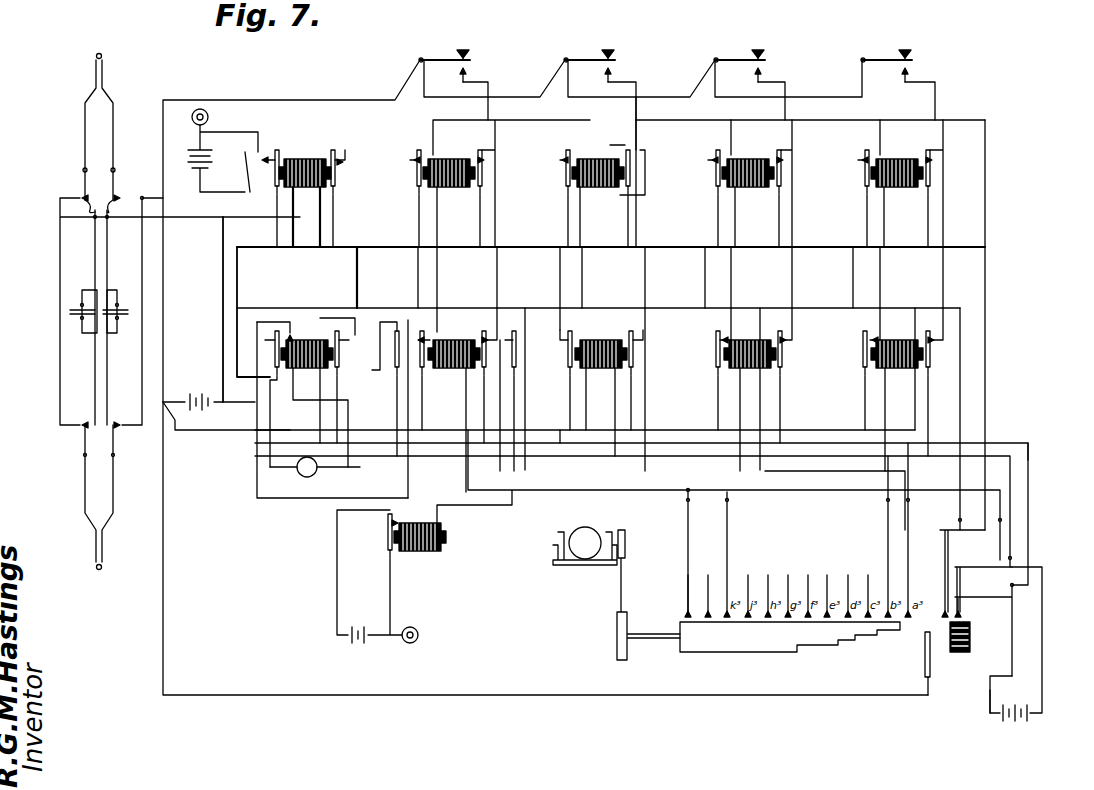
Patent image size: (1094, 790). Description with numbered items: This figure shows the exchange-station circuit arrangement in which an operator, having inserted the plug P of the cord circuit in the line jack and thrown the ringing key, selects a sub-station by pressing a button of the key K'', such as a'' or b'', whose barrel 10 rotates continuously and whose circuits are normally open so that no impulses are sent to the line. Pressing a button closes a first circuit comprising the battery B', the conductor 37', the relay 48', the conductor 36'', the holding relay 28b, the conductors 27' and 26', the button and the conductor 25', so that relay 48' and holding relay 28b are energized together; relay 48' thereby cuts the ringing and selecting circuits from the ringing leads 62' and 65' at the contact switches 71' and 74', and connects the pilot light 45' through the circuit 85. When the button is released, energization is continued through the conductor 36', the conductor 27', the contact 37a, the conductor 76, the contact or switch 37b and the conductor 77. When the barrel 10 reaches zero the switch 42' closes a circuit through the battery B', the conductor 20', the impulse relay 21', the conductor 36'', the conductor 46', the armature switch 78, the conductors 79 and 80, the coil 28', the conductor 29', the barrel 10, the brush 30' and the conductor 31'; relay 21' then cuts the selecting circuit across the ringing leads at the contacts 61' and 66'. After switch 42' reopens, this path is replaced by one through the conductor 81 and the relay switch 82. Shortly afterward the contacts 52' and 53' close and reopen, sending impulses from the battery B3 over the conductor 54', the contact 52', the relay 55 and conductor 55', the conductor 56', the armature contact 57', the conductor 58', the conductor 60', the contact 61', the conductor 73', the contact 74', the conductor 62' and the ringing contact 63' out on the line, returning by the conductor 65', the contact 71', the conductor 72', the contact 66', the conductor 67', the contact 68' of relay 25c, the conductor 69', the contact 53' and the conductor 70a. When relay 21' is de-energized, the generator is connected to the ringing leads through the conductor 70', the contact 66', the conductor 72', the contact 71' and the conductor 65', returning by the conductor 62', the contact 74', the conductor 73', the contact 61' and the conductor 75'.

The plug P is at (99, 312).
The ringing lead conductor 62' is at (180, 315).
The ringing contact 63' is at (94, 177).
The ringing lead conductor 65' is at (545, 377).
The conductor 25' is at (474, 84).
The key K'' is at (677, 297).
The button b'' is at (749, 76).
The button a'' is at (898, 74).
The pilot light 45' is at (207, 95).
The circuit 85 is at (198, 143).
The relay 48' is at (305, 155).
The contact switch 74' is at (274, 179).
The contact switch 71' is at (349, 183).
The conductor 72' is at (325, 247).
The conductor 36' is at (611, 225).
The conductor 36'' is at (654, 288).
The armature switch 78 is at (580, 150).
The holding relay 28b is at (600, 188).
The conductor 79 is at (560, 200).
The conductor 27' is at (648, 198).
The conductor 76 is at (640, 178).
The conductor 26' is at (659, 117).
The contact 37a is at (618, 145).
The conductor 46' is at (995, 325).
The conductor 37' is at (225, 309).
The conductor 73' is at (573, 321).
The battery B' is at (209, 389).
The conductor 20' is at (226, 426).
The impulse relay 21' is at (307, 368).
The contact 61' is at (275, 379).
The contact 66' is at (337, 363).
The conductor 75' is at (306, 410).
The conductor 70' is at (351, 480).
The conductor 60' is at (286, 513).
The contact 68' is at (391, 370).
The conductor 67' is at (379, 409).
The relay 25c is at (452, 372).
The armature contact 57' is at (519, 375).
The conductor 56' is at (526, 424).
The coil 28' is at (601, 371).
The relay switch 82 is at (568, 332).
The conductor 81 is at (590, 310).
The contact or switch 37b is at (640, 330).
The conductor 77 is at (645, 370).
The conductor 80 is at (580, 380).
The conductor 29' is at (646, 422).
The conductor 69' is at (641, 508).
The conductor 55' is at (1049, 443).
The conductor 58' is at (719, 521).
The relay 55 is at (391, 576).
The conductor 31' is at (675, 623).
The barrel 10 is at (728, 650).
The brush 30' is at (900, 663).
The contact 52' is at (1006, 606).
The contact 53' is at (1006, 555).
The switch 42' is at (952, 547).
The conductor 70a is at (1043, 625).
The battery B3 is at (1015, 728).
The conductor 54' is at (962, 704).